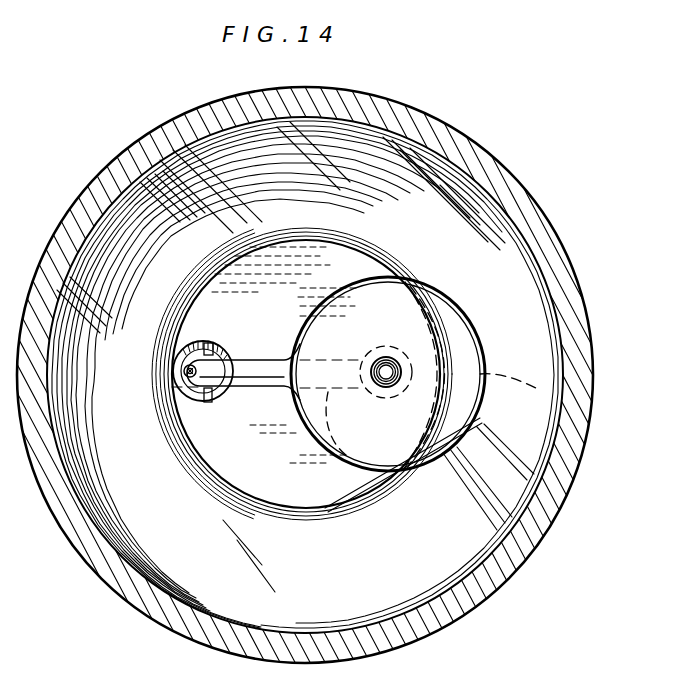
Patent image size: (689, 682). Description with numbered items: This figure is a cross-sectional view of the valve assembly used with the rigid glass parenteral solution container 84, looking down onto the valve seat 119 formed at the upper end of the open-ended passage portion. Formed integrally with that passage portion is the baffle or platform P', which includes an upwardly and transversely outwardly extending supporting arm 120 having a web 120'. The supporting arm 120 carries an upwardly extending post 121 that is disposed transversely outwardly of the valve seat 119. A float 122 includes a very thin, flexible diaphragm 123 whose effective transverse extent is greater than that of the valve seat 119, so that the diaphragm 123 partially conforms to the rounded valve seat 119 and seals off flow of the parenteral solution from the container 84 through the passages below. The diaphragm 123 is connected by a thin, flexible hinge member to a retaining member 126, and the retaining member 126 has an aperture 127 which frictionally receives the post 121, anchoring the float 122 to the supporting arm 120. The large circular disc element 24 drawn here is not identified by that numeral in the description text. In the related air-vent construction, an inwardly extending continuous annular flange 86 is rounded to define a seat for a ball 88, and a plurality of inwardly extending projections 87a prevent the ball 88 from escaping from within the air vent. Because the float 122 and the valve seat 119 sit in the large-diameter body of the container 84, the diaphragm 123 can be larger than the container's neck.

The parenteral solution container 84 is at (582, 298).
The disc 24 is at (458, 310).
The annular flange 86 is at (233, 397).
The projections 87a is at (195, 340).
The ball 88 is at (192, 356).
The supporting arm 120 is at (224, 332).
The web 120' is at (369, 402).
The post 121 is at (184, 367).
The float 122 is at (263, 357).
The flexible diaphragm 123 is at (387, 349).
The retaining member 126 is at (192, 400).
The aperture 127 is at (185, 380).
The valve seat 119 is at (400, 472).
The baffle or platform P' is at (486, 381).